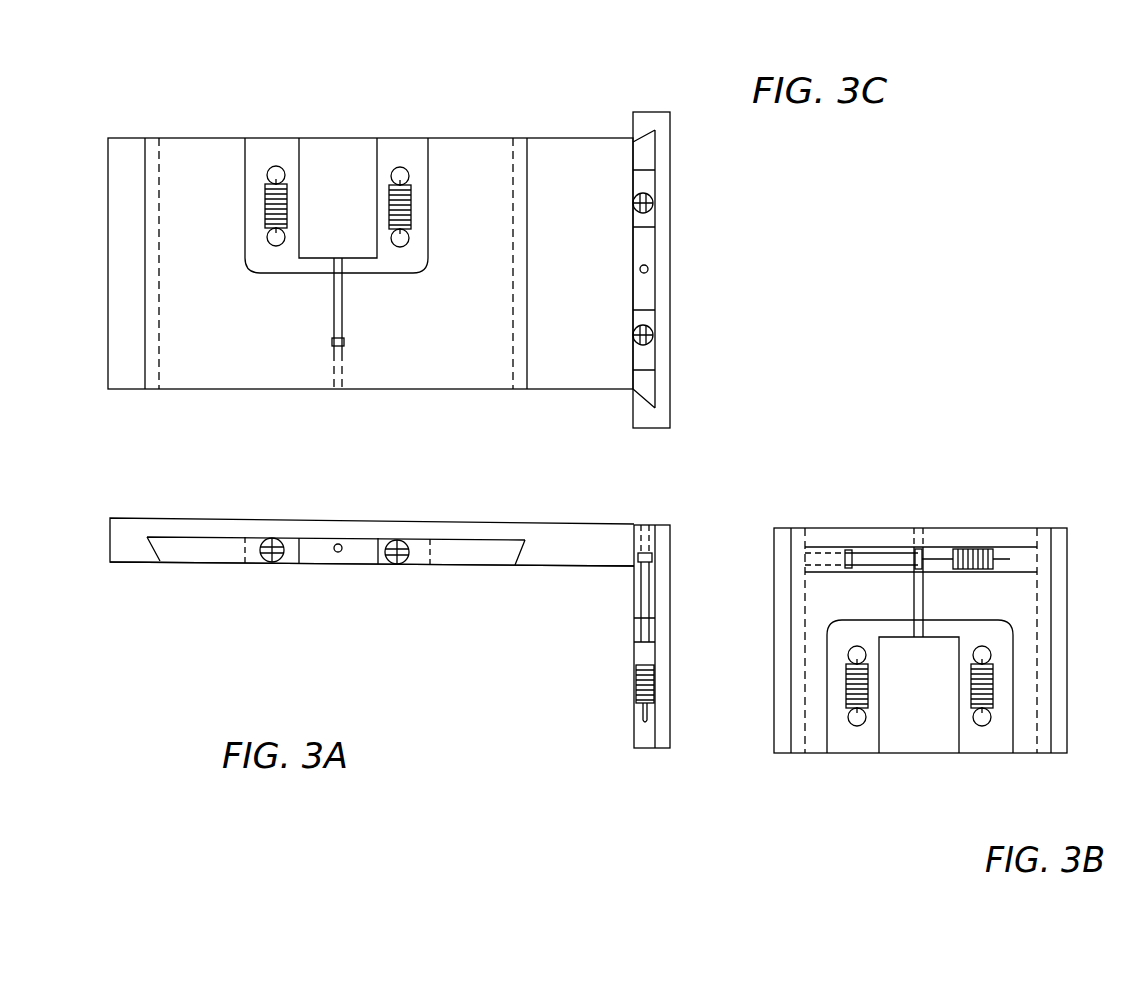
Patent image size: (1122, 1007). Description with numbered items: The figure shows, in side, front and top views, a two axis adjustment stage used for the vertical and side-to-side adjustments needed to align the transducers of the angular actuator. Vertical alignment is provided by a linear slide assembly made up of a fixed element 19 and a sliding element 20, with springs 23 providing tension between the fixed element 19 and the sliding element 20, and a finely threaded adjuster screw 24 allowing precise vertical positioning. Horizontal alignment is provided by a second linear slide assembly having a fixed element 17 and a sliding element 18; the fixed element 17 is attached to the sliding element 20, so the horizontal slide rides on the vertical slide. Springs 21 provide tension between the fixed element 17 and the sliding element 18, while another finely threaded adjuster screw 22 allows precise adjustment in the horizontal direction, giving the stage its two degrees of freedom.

In FIG. 3A, the fixed element 17 is at (427, 518).
In FIG. 3A, the sliding element 18 is at (250, 563).
In FIG. 3C, the fixed element 19 is at (672, 268).
In FIG. 3C, the sliding element 20 is at (646, 291).
In FIG. 3C, the springs 21 is at (275, 185).
In FIG. 3A, the springs 21 is at (276, 538).
In FIG. 3B, the springs 21 is at (1000, 551).
In FIG. 3C, the adjuster screw 22 is at (333, 297).
In FIG. 3A, the adjuster screw 22 is at (343, 555).
In FIG. 3C, the springs 23 is at (653, 195).
In FIG. 3A, the springs 23 is at (640, 710).
In FIG. 3B, the springs 23 is at (843, 703).
In FIG. 3C, the adjuster screw 24 is at (640, 269).
In FIG. 3B, the adjuster screw 24 is at (915, 590).